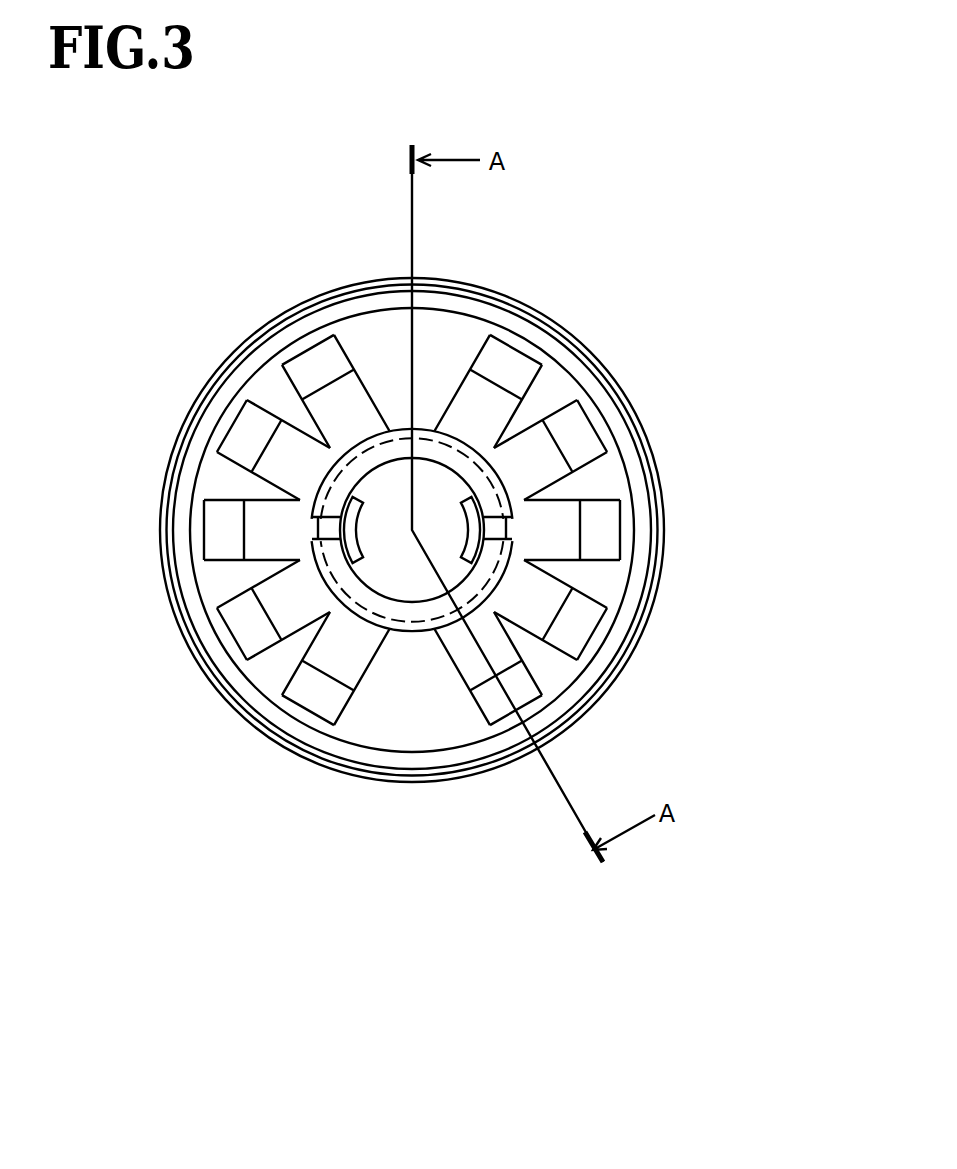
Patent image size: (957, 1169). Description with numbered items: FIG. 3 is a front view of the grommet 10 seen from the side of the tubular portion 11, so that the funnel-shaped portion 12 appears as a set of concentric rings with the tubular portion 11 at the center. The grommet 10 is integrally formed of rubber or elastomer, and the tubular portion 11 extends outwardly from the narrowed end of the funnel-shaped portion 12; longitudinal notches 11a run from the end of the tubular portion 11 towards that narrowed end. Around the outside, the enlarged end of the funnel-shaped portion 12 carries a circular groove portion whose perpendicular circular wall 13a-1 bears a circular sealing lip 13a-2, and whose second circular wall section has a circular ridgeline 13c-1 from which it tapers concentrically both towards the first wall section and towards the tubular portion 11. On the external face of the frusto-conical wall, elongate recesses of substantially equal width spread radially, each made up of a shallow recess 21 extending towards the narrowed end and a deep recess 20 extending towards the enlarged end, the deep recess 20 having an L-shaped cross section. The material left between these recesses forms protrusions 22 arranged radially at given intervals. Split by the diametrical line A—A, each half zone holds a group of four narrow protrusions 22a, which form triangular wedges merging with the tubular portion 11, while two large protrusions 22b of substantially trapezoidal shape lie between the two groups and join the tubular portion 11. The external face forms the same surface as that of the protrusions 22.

The grommet 10 is at (244, 302).
The first tubular portion 11 is at (603, 635).
The longitudinal notches 11a is at (508, 528).
The funnel-shaped portion 12 is at (463, 340).
The perpendicular circular wall 13a-1 is at (601, 402).
The circular sealing lip 13a-2 is at (575, 339).
The circular ridgeline 13c-1 is at (627, 464).
The deep recess 20 is at (247, 425).
The shallow recess 21 is at (302, 497).
The protrusions 22 is at (233, 955).
The narrow protrusions 22a is at (603, 577).
The large protrusions 22b is at (362, 362).